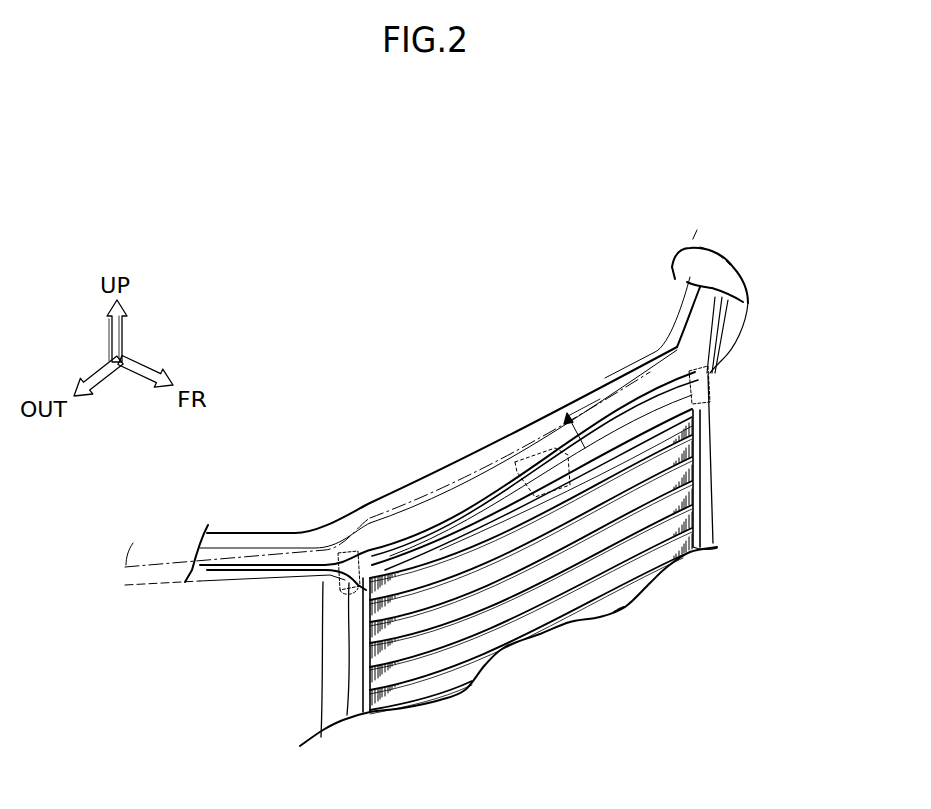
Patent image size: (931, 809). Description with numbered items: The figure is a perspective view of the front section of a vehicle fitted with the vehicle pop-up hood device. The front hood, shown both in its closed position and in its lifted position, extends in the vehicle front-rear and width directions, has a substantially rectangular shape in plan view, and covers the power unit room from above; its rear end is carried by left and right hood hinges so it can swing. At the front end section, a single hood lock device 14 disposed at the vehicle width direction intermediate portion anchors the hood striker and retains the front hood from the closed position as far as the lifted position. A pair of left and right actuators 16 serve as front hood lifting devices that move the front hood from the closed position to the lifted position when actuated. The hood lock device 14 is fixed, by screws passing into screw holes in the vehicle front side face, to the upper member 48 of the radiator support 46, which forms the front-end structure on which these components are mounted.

The hood lock device 14 is at (555, 492).
The actuators 16 is at (327, 583).
The radiator support 46 is at (495, 437).
The upper member 48 is at (437, 468).